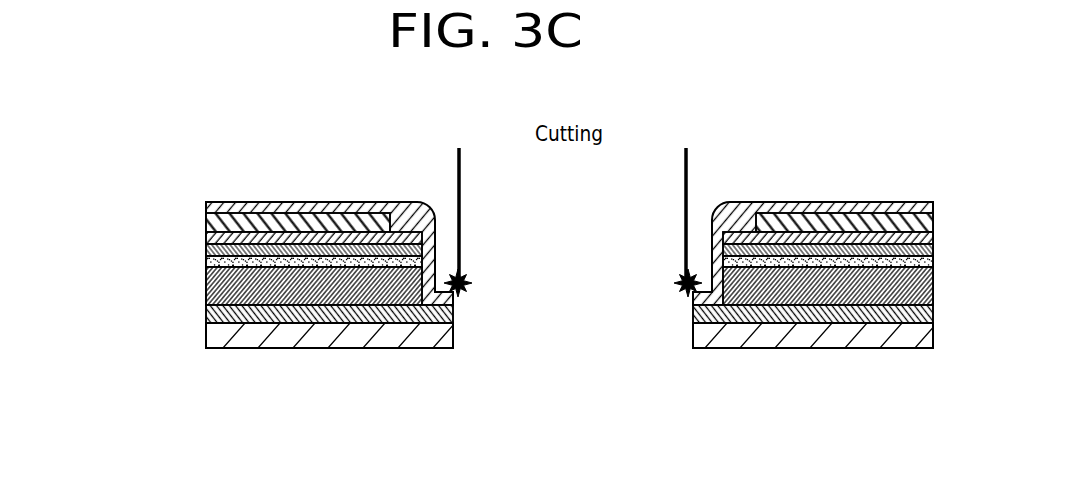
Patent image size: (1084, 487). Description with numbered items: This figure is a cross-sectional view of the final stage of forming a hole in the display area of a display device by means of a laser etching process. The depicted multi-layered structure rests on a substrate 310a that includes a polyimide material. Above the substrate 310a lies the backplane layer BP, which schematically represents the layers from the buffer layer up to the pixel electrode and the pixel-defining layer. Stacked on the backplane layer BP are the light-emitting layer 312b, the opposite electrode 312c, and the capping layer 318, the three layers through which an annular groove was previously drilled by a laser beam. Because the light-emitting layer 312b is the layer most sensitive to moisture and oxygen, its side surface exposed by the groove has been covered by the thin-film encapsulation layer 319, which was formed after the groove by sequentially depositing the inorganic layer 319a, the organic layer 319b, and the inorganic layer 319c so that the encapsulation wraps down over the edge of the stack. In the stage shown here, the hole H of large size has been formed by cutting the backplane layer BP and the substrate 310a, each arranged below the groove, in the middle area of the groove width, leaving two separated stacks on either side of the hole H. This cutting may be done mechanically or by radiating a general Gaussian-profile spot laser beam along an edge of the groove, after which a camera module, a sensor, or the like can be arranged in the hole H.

The thin-film encapsulation layer 319 is at (500, 233).
The inorganic layer 319c is at (206, 208).
The organic layer 319b is at (206, 222).
The inorganic layer 319a is at (206, 240).
The capping layer 318 is at (206, 252).
The opposite electrode 312c is at (206, 266).
The light-emitting layer 312b is at (206, 294).
The substrate 310a is at (245, 340).
The backplane layer BP is at (318, 315).
The hole H is at (578, 327).